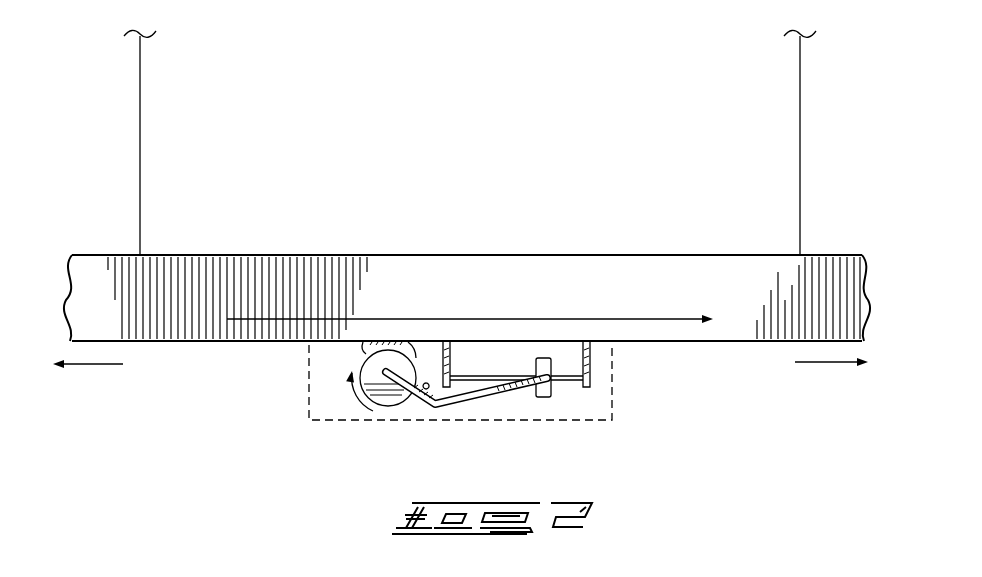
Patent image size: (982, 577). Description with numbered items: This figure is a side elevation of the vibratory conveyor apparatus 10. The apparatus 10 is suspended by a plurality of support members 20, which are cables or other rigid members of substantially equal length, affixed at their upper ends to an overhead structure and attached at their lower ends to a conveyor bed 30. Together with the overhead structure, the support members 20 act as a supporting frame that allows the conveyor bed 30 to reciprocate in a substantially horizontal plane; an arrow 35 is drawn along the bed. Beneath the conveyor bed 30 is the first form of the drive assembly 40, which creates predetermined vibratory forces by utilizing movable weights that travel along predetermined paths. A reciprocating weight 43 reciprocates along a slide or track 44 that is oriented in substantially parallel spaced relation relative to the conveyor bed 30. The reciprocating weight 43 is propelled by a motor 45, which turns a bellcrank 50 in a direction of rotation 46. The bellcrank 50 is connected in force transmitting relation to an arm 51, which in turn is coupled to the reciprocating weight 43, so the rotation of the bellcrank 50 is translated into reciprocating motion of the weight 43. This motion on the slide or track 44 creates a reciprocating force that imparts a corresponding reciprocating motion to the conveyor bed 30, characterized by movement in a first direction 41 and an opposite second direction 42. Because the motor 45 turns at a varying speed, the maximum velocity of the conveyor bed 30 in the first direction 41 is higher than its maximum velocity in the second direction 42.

The vibratory conveyor apparatus 10 is at (354, 136).
The support members 20 is at (148, 117).
The conveyor bed 30 is at (672, 280).
The direction of belt travel 35 is at (562, 318).
The drive assembly 40 is at (622, 381).
The first direction 41 is at (826, 364).
The second direction 42 is at (93, 366).
The reciprocating weight 43 is at (543, 408).
The slide or track 44 is at (478, 366).
The motor 45 is at (350, 353).
The direction of rotation 46 is at (370, 413).
The bellcrank 50 is at (425, 368).
The arm 51 is at (489, 410).